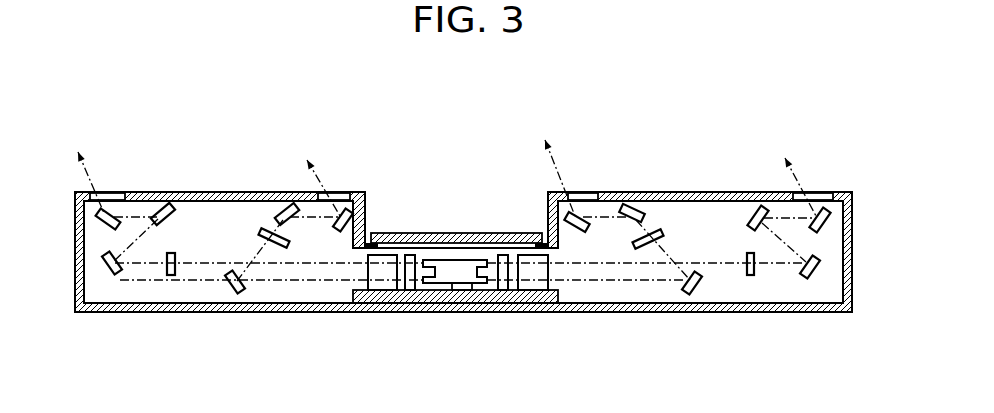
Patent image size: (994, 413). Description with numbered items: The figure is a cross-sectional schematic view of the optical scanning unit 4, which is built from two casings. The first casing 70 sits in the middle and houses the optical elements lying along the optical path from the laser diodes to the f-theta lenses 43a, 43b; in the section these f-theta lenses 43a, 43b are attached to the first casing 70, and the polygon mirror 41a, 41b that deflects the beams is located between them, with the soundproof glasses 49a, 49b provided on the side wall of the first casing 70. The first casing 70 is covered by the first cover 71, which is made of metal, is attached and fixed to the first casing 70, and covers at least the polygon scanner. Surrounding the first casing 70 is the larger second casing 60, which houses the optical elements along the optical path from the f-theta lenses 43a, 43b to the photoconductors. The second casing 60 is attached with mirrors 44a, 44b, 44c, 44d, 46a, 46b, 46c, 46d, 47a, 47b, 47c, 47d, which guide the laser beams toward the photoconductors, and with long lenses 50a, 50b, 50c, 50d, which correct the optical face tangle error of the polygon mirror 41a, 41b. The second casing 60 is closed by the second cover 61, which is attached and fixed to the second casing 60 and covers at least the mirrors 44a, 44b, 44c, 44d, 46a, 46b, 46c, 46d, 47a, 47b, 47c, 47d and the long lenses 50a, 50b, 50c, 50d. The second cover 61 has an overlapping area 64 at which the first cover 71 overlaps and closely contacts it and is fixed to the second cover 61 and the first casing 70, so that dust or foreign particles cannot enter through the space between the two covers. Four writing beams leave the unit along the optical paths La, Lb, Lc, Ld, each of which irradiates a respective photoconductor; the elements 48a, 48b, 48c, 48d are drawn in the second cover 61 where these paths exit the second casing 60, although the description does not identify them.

The optical scanning unit 4 is at (643, 86).
The second casing 60 is at (832, 313).
The second cover 61 is at (196, 192).
The overlapping area 64 is at (369, 243).
The first casing 70 is at (449, 304).
The first cover 71 is at (462, 232).
The polygon mirror 41a is at (480, 291).
The polygon mirror 41b is at (455, 259).
The f-theta lens 43a is at (391, 254).
The f-theta lens 43b is at (520, 254).
The soundproof glass 49a is at (410, 291).
The soundproof glass 49b is at (503, 291).
The mirror 44a is at (103, 263).
The mirror 44b is at (237, 291).
The mirror 44c is at (695, 292).
The mirror 44d is at (822, 269).
The mirror 46a is at (170, 205).
The mirror 46b is at (284, 204).
The mirror 46c is at (635, 205).
The mirror 46d is at (754, 206).
The mirror 47a is at (97, 213).
The mirror 47b is at (352, 210).
The mirror 47c is at (566, 213).
The mirror 47d is at (831, 222).
The light exit window 48a is at (103, 193).
The light exit window 48b is at (333, 193).
The light exit window 48c is at (583, 193).
The light exit window 48d is at (817, 193).
The long lens 50a is at (171, 276).
The long lens 50b is at (263, 229).
The long lens 50c is at (657, 232).
The long lens 50d is at (752, 276).
The optical path La is at (91, 150).
The optical path Lb is at (319, 150).
The optical path Lc is at (558, 136).
The optical path Ld is at (796, 160).